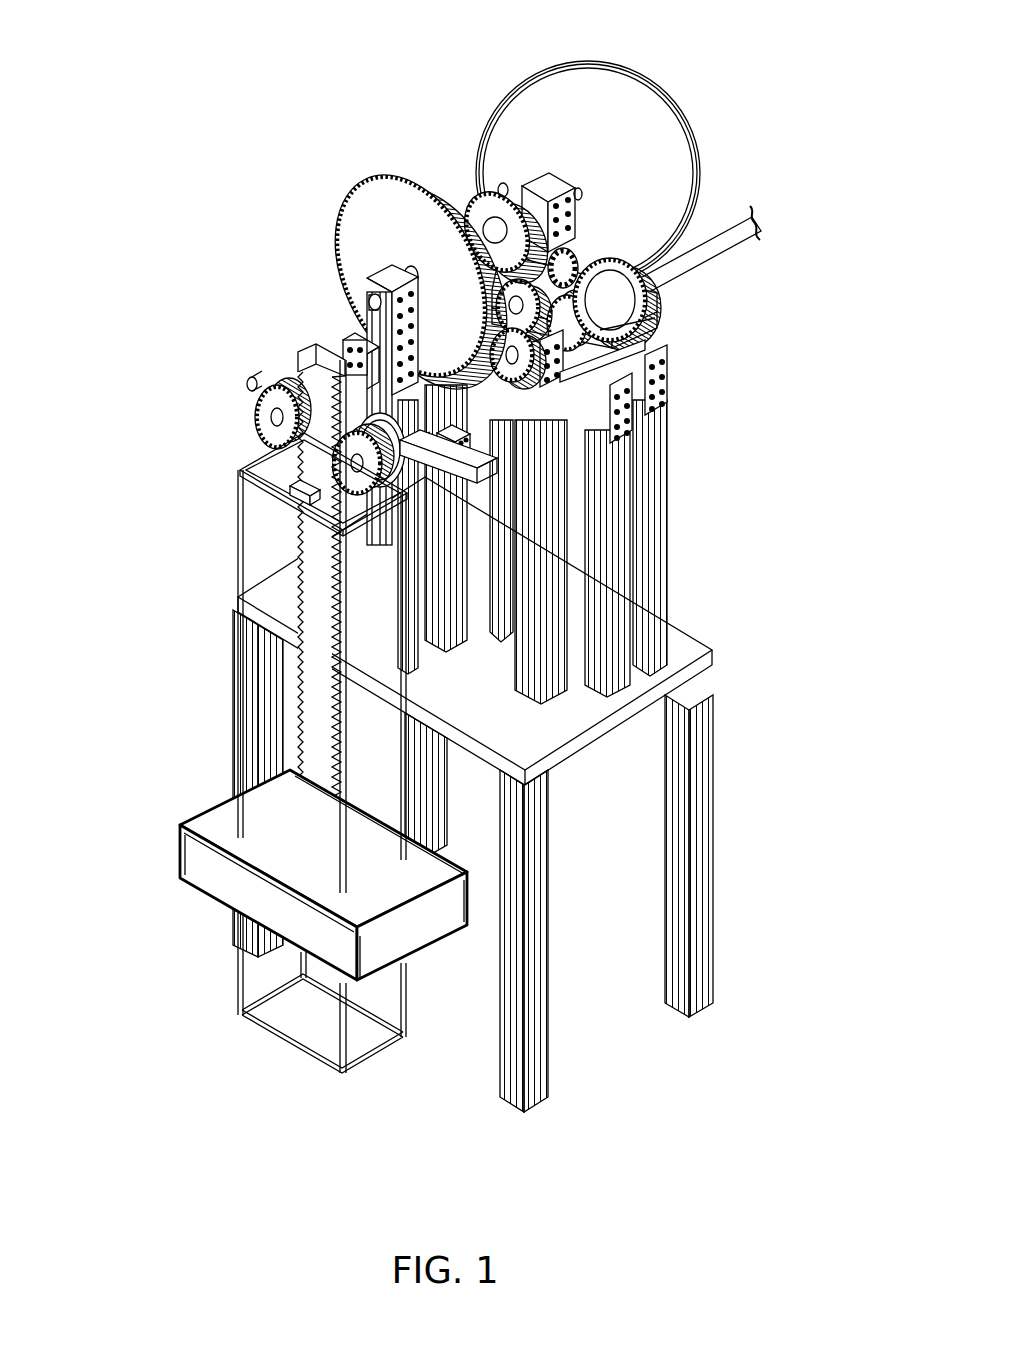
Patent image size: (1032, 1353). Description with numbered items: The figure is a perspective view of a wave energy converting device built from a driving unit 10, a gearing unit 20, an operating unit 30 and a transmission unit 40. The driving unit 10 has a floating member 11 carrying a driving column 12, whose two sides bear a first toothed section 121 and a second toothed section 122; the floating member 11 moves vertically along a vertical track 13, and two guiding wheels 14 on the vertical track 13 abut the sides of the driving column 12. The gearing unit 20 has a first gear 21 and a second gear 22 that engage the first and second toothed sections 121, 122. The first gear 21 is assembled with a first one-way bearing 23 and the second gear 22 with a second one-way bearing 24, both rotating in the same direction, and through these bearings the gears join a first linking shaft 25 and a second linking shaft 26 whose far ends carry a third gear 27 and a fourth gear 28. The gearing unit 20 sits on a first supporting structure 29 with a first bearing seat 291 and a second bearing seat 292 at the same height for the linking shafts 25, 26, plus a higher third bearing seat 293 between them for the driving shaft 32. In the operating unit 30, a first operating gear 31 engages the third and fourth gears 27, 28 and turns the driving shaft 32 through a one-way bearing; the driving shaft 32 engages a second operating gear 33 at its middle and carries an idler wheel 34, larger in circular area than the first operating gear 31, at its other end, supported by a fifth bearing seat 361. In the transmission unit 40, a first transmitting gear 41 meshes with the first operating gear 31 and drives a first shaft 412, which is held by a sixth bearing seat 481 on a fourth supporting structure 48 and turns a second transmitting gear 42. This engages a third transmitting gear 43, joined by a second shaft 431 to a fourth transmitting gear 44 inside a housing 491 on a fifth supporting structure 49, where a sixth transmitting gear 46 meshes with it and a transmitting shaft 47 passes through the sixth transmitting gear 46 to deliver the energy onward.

The driving unit 10 is at (217, 527).
The floating member 11 is at (200, 851).
The driving column 12 is at (317, 648).
The first toothed section 121 is at (332, 750).
The second toothed section 122 is at (300, 698).
The vertical track 13 is at (243, 578).
The guiding wheels 14 is at (290, 490).
The gearing unit 20 is at (214, 374).
The first gear 21 is at (348, 461).
The second gear 22 is at (258, 400).
The first one-way bearing 23 is at (410, 540).
The second one-way bearing 24 is at (246, 380).
The first linking shaft 25 is at (300, 488).
The second linking shaft 26 is at (271, 417).
The third gear 27 is at (480, 403).
The fourth gear 28 is at (340, 318).
The first supporting structure 29 is at (450, 613).
The first bearing seat 291 is at (478, 424).
The second bearing seat 292 is at (340, 335).
The third bearing seat 293 is at (385, 278).
The operating unit 30 is at (664, 102).
The first operating gear 31 is at (410, 215).
The driving shaft 32 is at (482, 222).
The second operating gear 33 is at (500, 183).
The idler wheel 34 is at (607, 97).
The fifth bearing seat 361 is at (553, 186).
The transmission unit 40 is at (607, 221).
The first transmitting gear 41 is at (655, 408).
The first shaft 412 is at (507, 354).
The second transmitting gear 42 is at (668, 362).
The third transmitting gear 43 is at (660, 300).
The second shaft 431 is at (505, 311).
The fourth transmitting gear 44 is at (668, 268).
The sixth transmitting gear 46 is at (660, 317).
The transmitting shaft 47 is at (766, 228).
The fourth supporting structure 48 is at (540, 527).
The sixth bearing seat 481 is at (634, 400).
The fifth supporting structure 49 is at (617, 500).
The housing 491 is at (657, 332).